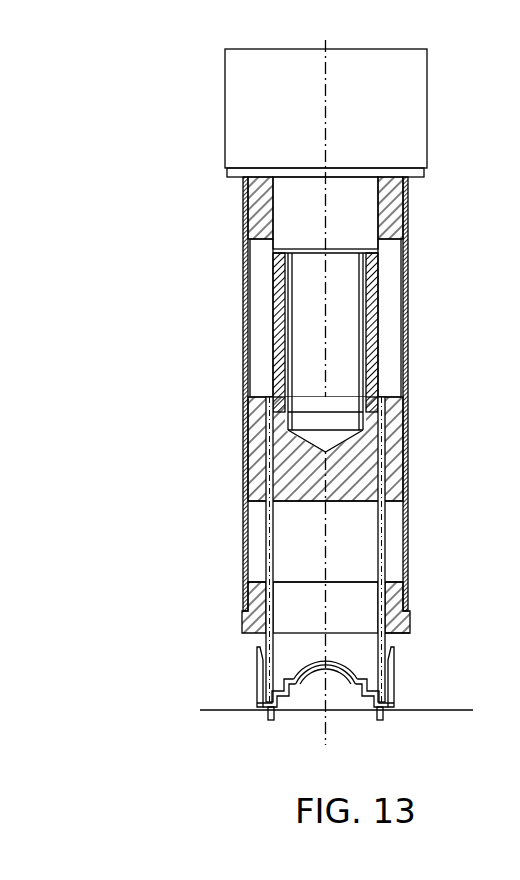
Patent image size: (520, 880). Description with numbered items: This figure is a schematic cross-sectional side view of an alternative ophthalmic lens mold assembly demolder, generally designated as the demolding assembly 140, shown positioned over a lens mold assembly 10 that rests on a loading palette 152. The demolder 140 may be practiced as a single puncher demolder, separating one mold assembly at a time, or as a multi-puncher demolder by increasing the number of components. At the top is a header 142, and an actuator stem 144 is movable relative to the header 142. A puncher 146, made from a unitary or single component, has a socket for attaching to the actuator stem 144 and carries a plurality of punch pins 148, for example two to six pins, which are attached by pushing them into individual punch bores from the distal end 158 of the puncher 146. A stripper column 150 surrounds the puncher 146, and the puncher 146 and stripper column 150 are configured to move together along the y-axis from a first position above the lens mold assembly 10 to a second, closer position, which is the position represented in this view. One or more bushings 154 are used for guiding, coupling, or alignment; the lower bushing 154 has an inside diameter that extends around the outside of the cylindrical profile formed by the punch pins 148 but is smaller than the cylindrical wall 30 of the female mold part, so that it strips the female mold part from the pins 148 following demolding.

The lens mold assembly 10 is at (333, 683).
The cylindrical wall 30 is at (258, 687).
The demolding assembly 140 is at (191, 177).
The header 142 is at (436, 106).
The actuator stem 144 is at (357, 203).
The puncher 146 is at (380, 422).
The punch pins 148 is at (265, 528).
The stripper column 150 is at (228, 414).
The loading palette 152 is at (433, 712).
The bushing 154 is at (247, 208).
The distal end 158 is at (393, 635).